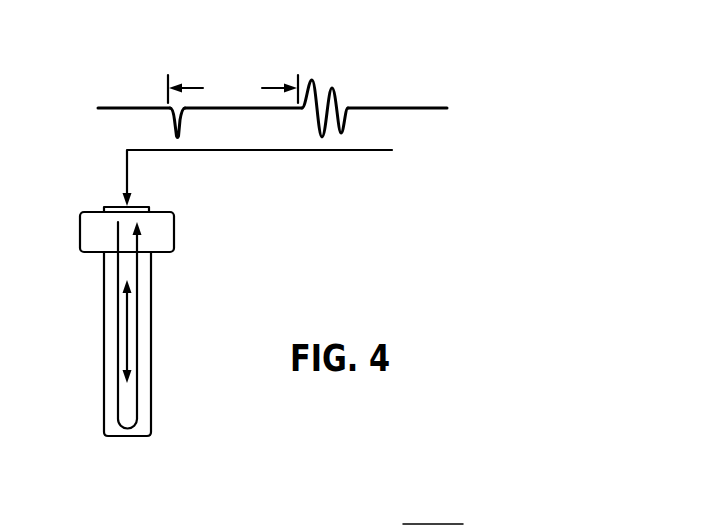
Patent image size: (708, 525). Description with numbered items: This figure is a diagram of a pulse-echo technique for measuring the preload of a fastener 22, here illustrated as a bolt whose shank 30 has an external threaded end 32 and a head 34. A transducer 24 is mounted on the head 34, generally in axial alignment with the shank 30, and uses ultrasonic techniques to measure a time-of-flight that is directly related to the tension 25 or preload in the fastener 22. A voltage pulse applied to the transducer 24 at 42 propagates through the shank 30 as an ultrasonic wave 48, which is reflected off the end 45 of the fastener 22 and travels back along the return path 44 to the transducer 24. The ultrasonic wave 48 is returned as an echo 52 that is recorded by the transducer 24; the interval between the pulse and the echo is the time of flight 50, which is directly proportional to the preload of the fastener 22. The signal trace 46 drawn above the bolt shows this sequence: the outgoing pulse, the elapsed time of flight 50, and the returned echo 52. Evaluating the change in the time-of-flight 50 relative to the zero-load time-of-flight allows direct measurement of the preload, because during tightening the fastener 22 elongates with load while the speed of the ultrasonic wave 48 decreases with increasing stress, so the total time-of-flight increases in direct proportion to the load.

The fastener 22 is at (135, 322).
The transducer 24 is at (141, 206).
The tension 25 is at (126, 323).
The shank 30 is at (103, 340).
The threaded end 32 is at (0, 24).
The head 34 is at (97, 231).
The voltage pulse 42 is at (126, 171).
The return path 44 is at (137, 359).
The end 45 is at (120, 446).
The sensor signal trace 46 is at (274, 75).
The ultrasonic wave 48 is at (156, 128).
The time of flight 50 is at (254, 64).
The echo 52 is at (352, 88).